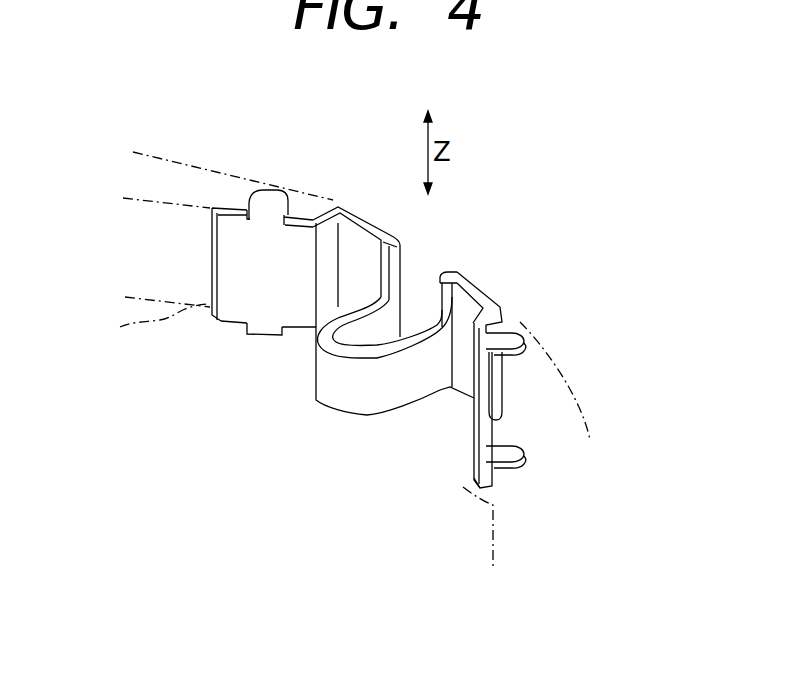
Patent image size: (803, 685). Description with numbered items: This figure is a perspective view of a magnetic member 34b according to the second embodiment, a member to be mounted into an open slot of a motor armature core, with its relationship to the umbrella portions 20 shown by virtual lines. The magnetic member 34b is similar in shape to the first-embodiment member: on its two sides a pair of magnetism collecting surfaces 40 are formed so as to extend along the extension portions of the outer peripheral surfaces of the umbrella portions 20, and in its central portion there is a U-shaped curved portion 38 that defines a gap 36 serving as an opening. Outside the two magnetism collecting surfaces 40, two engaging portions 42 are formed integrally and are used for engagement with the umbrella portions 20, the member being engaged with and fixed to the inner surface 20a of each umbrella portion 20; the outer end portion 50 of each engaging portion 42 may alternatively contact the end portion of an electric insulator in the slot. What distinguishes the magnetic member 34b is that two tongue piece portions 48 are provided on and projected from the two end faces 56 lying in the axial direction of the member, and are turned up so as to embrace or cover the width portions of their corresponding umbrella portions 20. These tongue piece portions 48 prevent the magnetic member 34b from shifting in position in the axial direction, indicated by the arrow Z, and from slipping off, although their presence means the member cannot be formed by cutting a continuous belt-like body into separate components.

The umbrella portion 20 is at (167, 158).
The inner surface of the umbrella portion 20a is at (120, 327).
The magnetic member 34b is at (477, 218).
The gap 36 is at (418, 290).
The U-shaped curved portion 38 is at (338, 411).
The magnetism collecting surface 40 is at (363, 207).
The engaging portion 42 is at (307, 218).
The tongue piece portion 48 is at (269, 203).
The outer end portion of the engaging portion 50 is at (212, 312).
The end face 56 is at (237, 208).